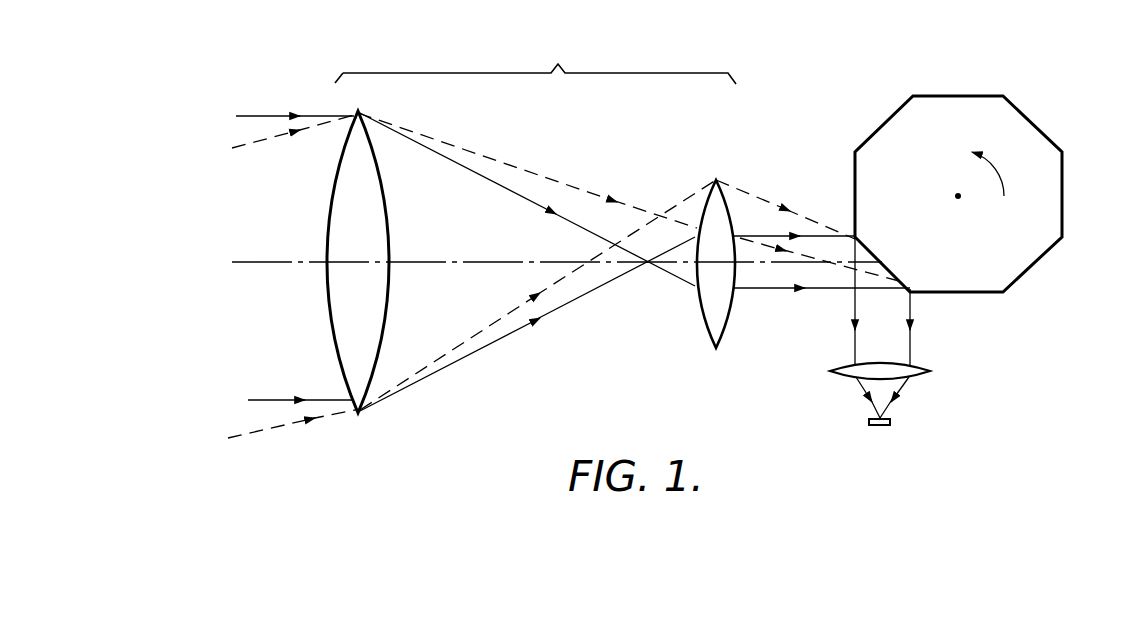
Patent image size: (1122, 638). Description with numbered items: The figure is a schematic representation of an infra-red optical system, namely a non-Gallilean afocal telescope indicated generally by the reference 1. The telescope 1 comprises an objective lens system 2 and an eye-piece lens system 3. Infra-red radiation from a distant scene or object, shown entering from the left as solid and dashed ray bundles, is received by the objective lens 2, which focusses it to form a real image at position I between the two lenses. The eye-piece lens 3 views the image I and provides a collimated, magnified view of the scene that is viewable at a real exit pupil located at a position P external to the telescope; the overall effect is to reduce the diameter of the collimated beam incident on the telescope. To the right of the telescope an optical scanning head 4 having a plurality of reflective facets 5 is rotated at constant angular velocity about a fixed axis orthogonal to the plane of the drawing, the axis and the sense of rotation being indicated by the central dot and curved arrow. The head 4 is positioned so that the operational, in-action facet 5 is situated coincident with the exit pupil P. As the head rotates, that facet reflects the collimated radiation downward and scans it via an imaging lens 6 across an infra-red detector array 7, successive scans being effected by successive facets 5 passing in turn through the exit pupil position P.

The infra-red optical system 1 is at (535, 63).
The objective lens system 2 is at (345, 303).
The eye-piece lens system 3 is at (718, 318).
The optical scanning head 4 is at (955, 189).
The reflective facets 5 is at (898, 113).
The imaging lens 6 is at (908, 372).
The infra-red detector array 7 is at (891, 422).
The real image position I is at (642, 272).
The exit pupil position P is at (918, 299).